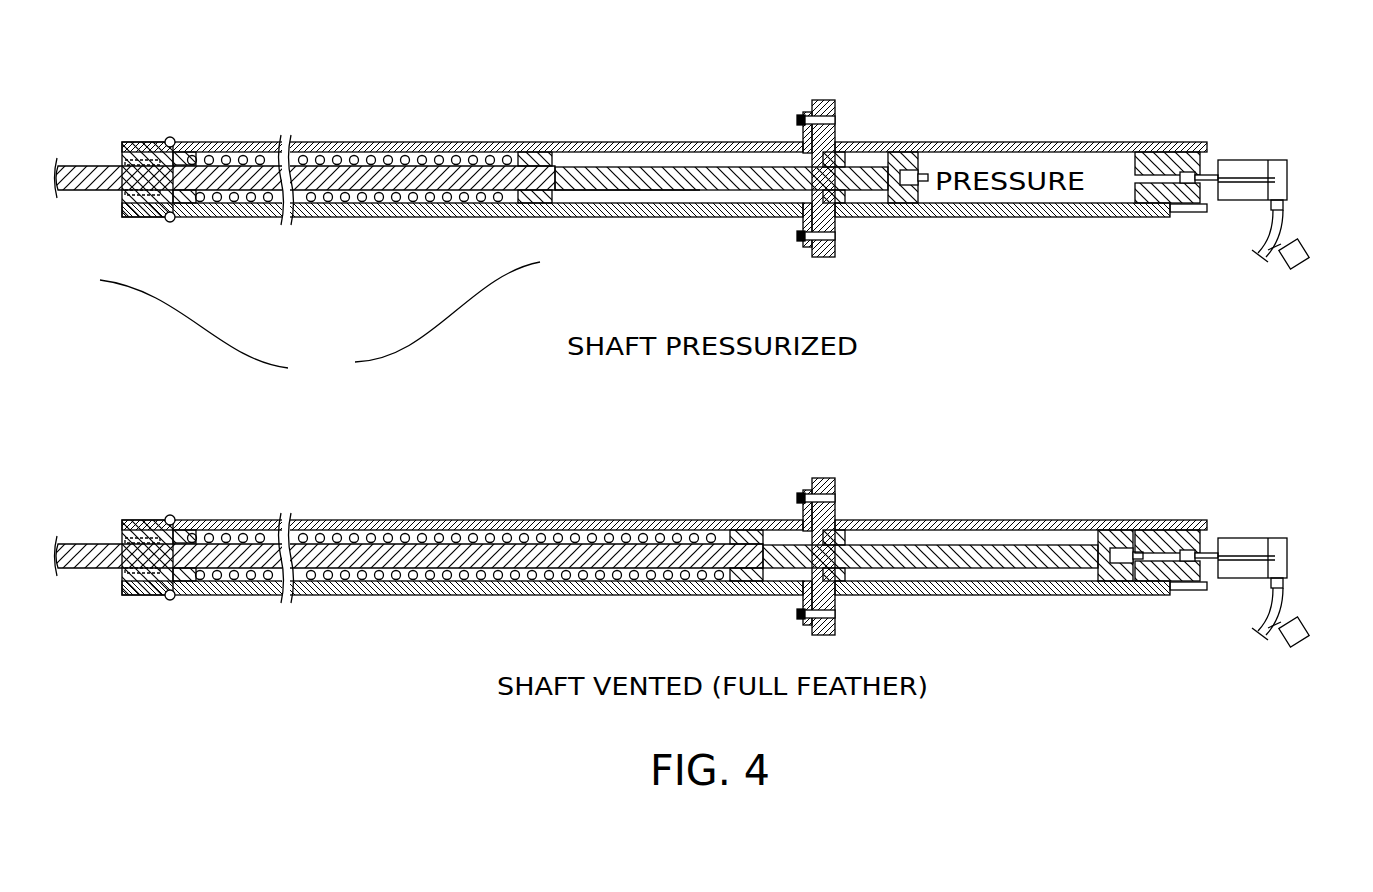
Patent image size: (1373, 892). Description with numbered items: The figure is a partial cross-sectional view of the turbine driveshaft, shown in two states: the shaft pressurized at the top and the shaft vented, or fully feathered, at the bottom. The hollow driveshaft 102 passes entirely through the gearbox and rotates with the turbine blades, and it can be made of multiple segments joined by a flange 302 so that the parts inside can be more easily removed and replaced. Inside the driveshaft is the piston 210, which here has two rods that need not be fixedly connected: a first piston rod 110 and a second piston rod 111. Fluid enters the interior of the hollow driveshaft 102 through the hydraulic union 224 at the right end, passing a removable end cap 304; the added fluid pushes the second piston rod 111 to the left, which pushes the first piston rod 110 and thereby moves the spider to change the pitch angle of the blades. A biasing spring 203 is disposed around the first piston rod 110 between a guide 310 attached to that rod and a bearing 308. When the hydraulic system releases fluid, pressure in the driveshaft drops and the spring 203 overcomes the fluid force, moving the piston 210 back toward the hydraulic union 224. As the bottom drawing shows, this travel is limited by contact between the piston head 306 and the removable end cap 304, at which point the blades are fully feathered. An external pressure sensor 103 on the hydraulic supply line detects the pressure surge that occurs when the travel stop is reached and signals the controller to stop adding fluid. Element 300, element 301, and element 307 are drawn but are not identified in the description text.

The hollow driveshaft 102 is at (1085, 140).
The external pressure sensor 103 is at (1294, 612).
The first piston rod 110 is at (93, 196).
The second piston rod 111 is at (585, 194).
The biasing spring 203 is at (455, 150).
The piston 210 is at (320, 321).
The hydraulic union 224 is at (1245, 158).
The piston rod 300 is at (745, 162).
The end cap 301 is at (207, 225).
The flange 302 is at (812, 98).
The removable end cap 304 is at (1175, 151).
The piston head 306 is at (910, 206).
The piston seal 307 is at (838, 206).
The bearing 308 is at (137, 200).
The guide 310 is at (537, 150).